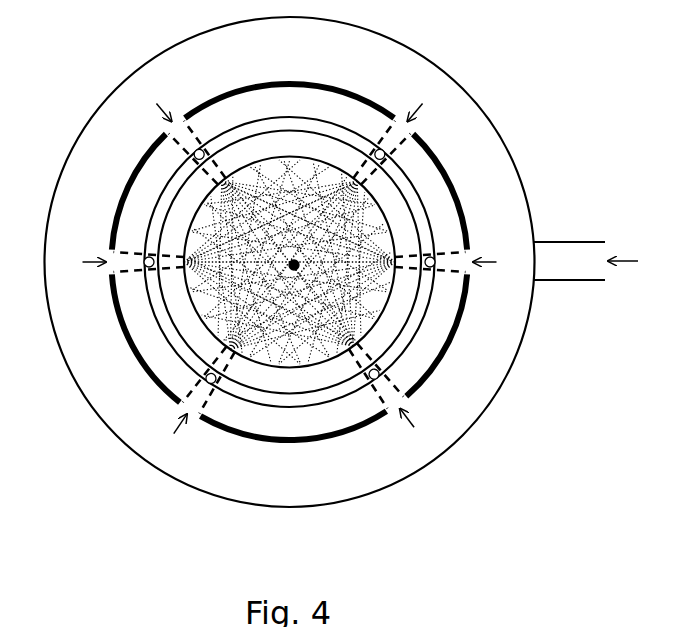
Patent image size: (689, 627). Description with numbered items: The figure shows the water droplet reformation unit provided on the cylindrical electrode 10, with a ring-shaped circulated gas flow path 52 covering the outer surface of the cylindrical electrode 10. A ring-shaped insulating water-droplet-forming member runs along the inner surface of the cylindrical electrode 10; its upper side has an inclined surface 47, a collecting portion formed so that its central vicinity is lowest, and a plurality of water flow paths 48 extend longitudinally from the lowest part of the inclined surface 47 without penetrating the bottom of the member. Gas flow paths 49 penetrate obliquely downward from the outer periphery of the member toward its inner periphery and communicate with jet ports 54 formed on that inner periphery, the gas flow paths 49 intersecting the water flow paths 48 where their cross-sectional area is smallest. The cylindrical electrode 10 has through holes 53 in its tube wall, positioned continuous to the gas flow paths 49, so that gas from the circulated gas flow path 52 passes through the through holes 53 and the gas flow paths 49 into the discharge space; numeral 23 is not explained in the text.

The cylindrical electrode 10 is at (460, 193).
The inlet tube 23 is at (577, 281).
The inclined surface 47 is at (423, 167).
The water flow paths 48 is at (379, 379).
The gas flow paths 49 is at (392, 398).
The circulated gas flow path 52 is at (471, 132).
The through holes 53 is at (395, 407).
The jet port 54 is at (351, 351).